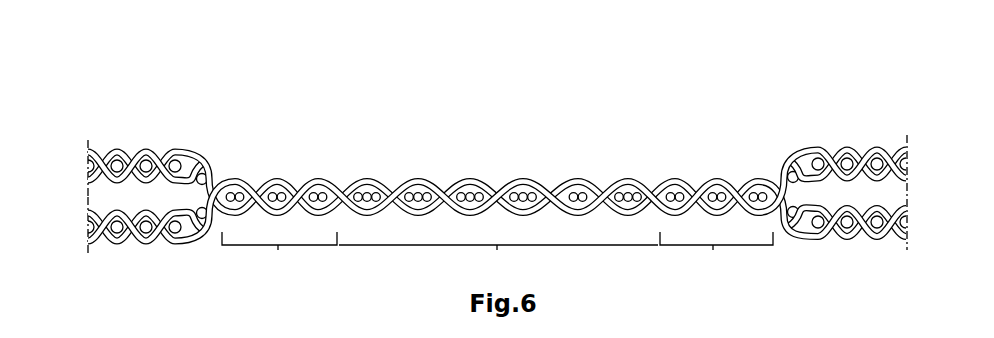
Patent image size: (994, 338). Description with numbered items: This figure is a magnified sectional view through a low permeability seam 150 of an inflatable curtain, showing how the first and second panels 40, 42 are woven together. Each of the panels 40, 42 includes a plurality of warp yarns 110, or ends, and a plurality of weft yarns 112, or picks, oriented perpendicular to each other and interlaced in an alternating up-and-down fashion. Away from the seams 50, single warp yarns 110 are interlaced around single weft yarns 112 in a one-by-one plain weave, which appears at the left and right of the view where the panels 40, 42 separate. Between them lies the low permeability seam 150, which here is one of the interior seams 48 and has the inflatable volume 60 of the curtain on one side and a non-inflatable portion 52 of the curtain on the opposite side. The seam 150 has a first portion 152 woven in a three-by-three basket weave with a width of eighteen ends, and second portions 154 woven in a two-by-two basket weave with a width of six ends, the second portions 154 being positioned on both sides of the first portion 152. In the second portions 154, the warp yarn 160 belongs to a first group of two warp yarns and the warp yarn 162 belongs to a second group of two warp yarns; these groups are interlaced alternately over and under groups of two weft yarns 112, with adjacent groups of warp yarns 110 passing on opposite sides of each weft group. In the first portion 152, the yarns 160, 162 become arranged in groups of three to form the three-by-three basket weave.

The first panel 40 is at (75, 147).
The second panel 42 is at (72, 246).
The interior seams 48 is at (508, 132).
The seams 50 is at (468, 152).
The non-inflatable portion 52 is at (115, 197).
The inflatable volume 60 is at (855, 195).
The warp yarns 110 is at (88, 178).
The weft yarns 112 is at (175, 160).
The low permeability seam 150 is at (540, 160).
The first portion 152 is at (498, 257).
The second portions 154 is at (497, 251).
The warp yarn of first group 160 is at (282, 182).
The warp yarn of second group 162 is at (237, 183).